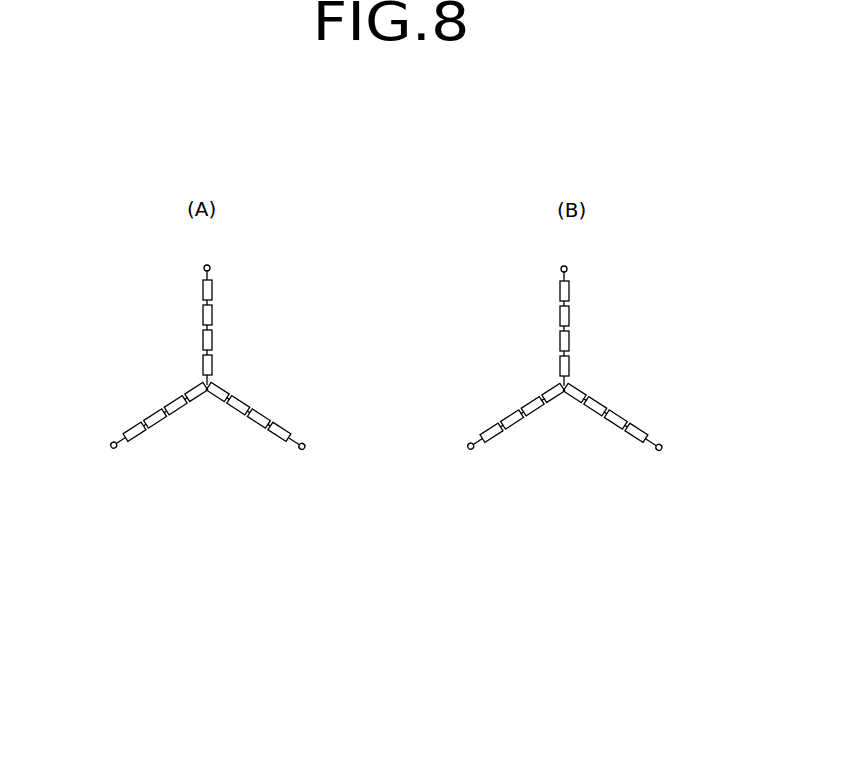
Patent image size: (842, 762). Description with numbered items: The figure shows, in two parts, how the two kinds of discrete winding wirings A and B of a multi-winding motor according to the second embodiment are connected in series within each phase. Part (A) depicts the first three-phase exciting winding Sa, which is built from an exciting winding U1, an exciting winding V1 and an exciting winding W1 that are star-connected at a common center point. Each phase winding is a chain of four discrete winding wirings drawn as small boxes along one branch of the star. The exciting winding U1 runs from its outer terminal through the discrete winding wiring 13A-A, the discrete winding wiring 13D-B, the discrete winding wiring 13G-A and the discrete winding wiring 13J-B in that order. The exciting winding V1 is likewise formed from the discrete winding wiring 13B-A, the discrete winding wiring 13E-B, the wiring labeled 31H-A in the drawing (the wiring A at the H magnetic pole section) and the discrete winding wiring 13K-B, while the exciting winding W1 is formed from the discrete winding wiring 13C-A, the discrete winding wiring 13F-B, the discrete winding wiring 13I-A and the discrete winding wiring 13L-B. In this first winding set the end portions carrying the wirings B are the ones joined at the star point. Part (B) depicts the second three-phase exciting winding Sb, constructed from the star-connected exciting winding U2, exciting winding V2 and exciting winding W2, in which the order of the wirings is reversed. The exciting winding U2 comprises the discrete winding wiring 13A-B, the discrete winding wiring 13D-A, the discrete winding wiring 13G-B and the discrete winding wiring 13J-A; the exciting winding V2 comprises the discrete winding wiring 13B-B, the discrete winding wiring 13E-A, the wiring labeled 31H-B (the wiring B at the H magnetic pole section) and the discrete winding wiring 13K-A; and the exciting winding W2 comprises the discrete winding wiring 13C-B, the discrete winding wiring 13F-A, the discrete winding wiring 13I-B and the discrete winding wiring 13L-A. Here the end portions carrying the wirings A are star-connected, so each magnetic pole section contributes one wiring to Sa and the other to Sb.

The exciting winding U1 is at (195, 270).
The exciting winding V1 is at (288, 408).
The exciting winding W1 is at (140, 453).
The first three-phase exciting winding Sa is at (128, 302).
The discrete winding wiring A 13A-A is at (213, 290).
The discrete winding wiring B 13D-B is at (213, 315).
The discrete winding wiring A 13G-A is at (213, 340).
The discrete winding wiring B 13J-B is at (213, 366).
The discrete winding wiring B 13L-B is at (191, 389).
The discrete winding wiring A 13I-A is at (171, 401).
The discrete winding wiring B 13F-B is at (152, 414).
The discrete winding wiring A 13C-A is at (130, 428).
The discrete winding wiring B 13K-B is at (217, 398).
The coil 31H-A is at (238, 410).
The discrete winding wiring B 13E-B is at (260, 424).
The discrete winding wiring A 13B-A is at (277, 436).
The exciting winding U2 is at (532, 253).
The exciting winding V2 is at (646, 424).
The exciting winding W2 is at (506, 457).
The second three-phase exciting winding Sb is at (493, 329).
The discrete winding wiring B 13A-B is at (601, 295).
The discrete winding wiring A 13D-A is at (614, 318).
The discrete winding wiring B 13G-B is at (602, 343).
The discrete winding wiring A 13J-A is at (609, 368).
The discrete winding wiring A 13L-A is at (531, 341).
The discrete winding wiring B 13I-B is at (510, 362).
The discrete winding wiring A 13F-A is at (490, 383).
The discrete winding wiring B 13C-B is at (466, 407).
The discrete winding wiring A 13K-A is at (556, 419).
The coil 31H-B is at (571, 439).
The discrete winding wiring A 13E-A is at (620, 478).
The discrete winding wiring B 13B-B is at (654, 470).